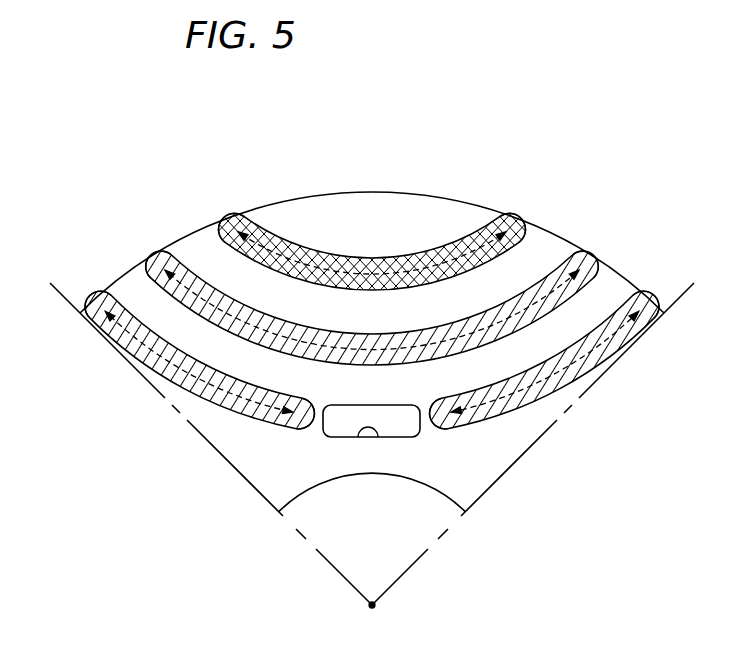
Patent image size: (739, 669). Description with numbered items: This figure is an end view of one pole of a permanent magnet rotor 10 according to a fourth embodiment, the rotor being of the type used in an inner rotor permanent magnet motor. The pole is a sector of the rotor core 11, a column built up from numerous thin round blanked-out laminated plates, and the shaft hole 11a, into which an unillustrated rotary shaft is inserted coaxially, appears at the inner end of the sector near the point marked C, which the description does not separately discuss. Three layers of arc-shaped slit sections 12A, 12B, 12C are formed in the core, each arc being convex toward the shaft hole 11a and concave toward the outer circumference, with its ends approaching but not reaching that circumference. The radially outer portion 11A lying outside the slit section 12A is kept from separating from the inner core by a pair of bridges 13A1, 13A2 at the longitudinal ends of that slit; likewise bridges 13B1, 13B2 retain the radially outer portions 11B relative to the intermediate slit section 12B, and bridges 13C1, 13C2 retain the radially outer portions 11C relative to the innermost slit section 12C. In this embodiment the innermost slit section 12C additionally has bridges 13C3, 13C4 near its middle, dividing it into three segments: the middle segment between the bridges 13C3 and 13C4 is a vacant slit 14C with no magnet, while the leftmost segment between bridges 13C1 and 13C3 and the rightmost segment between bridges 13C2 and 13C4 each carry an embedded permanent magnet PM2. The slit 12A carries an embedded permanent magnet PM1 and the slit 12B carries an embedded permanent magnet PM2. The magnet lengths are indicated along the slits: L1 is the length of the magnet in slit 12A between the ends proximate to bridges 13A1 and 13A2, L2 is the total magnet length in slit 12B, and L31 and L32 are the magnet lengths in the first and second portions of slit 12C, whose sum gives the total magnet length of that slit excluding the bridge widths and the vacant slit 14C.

The permanent magnet rotor 10 is at (633, 195).
The rotor core 11 is at (510, 438).
The radially outer portion 11A is at (328, 212).
The radially outer portions 11B is at (297, 307).
The radially outer portions 11C is at (290, 375).
The shaft hole 11a is at (413, 480).
The slit section 12A is at (281, 235).
The intermediate slit section 12B is at (202, 277).
The slit section 12C is at (128, 312).
The bridge 13A1 is at (238, 214).
The bridge 13A2 is at (506, 214).
The bridge 13B1 is at (163, 251).
The bridge 13B2 is at (581, 251).
The bridge 13C1 is at (100, 292).
The bridge 13C2 is at (640, 292).
The bridge 13C3 is at (310, 427).
The bridge 13C4 is at (434, 427).
The vacant slit 14C is at (365, 437).
The center point C is at (372, 605).
The permanent magnet PM1 is at (397, 258).
The permanent magnet PM2 is at (691, 387).
The length of embedded magnet L1 is at (450, 247).
The total length of embedded magnet L2 is at (435, 344).
The length of embedded magnet L31 is at (207, 382).
The length of embedded magnet L32 is at (505, 394).